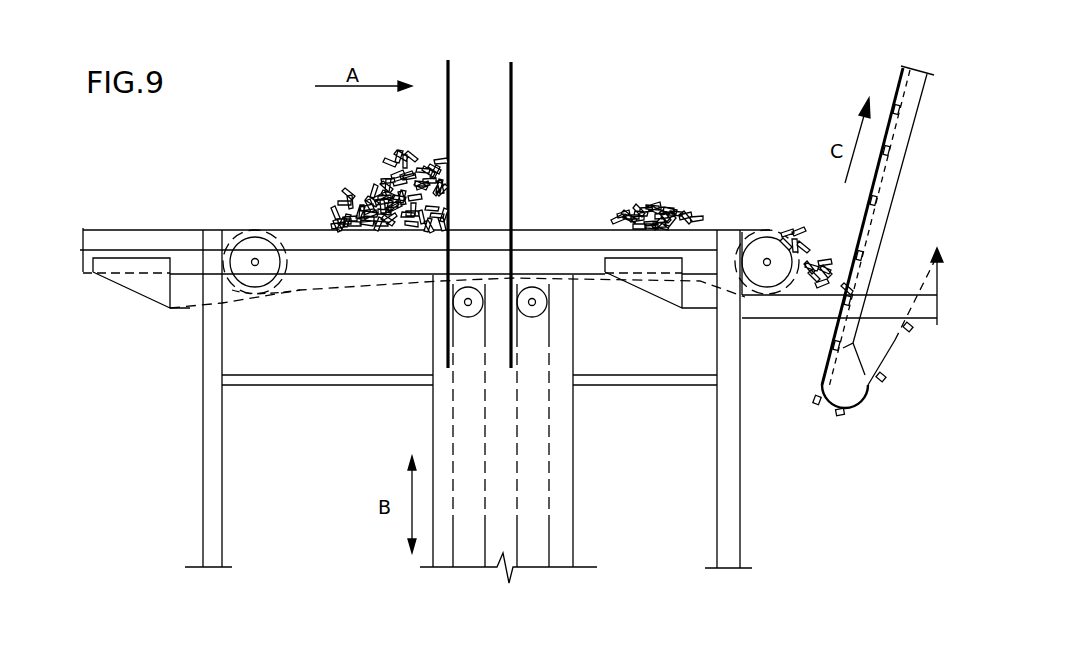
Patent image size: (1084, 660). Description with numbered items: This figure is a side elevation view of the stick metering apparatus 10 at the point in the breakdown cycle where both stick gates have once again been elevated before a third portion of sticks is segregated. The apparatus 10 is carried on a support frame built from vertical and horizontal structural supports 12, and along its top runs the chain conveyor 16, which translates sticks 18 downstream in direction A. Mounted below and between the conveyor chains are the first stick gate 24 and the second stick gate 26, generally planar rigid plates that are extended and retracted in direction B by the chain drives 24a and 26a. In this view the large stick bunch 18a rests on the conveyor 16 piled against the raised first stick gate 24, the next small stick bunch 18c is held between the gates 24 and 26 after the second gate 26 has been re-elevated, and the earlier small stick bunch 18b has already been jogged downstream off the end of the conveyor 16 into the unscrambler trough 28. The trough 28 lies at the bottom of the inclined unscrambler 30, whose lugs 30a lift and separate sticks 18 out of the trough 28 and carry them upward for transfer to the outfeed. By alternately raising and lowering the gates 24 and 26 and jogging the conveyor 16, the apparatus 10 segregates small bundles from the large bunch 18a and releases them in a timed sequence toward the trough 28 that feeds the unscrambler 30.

The apparatus 10 is at (545, 119).
The structural supports 12 is at (740, 486).
The chain conveyor 16 is at (338, 302).
The sticks 18 is at (864, 200).
The stick bunch 18a is at (333, 174).
The small stick bunch 18b is at (812, 241).
The small stick bunch 18c is at (650, 198).
The first stick gate 24 is at (452, 95).
The chain drive 24a is at (452, 436).
The second stick gate 26 is at (514, 148).
The chain drive 26a is at (550, 434).
The unscrambler trough 28 is at (812, 268).
The unscrambler 30 is at (903, 165).
The lugs 30a is at (890, 108).